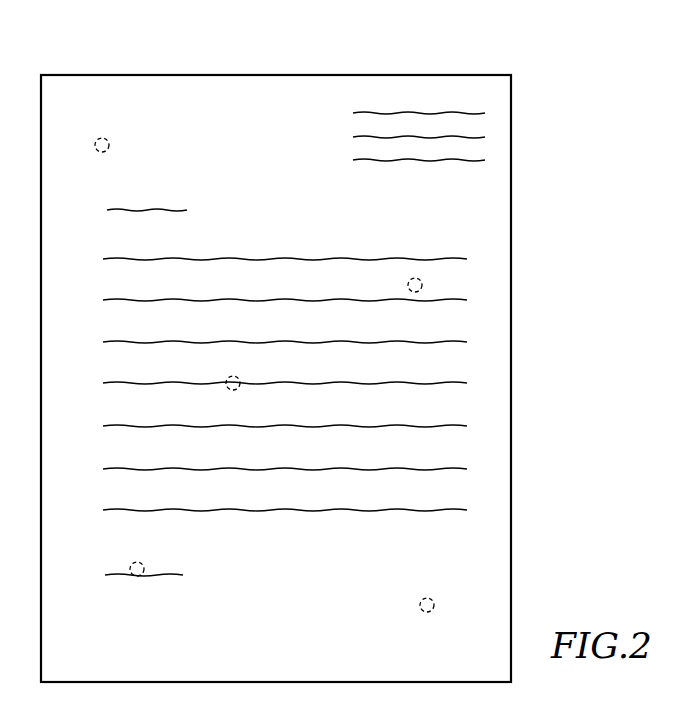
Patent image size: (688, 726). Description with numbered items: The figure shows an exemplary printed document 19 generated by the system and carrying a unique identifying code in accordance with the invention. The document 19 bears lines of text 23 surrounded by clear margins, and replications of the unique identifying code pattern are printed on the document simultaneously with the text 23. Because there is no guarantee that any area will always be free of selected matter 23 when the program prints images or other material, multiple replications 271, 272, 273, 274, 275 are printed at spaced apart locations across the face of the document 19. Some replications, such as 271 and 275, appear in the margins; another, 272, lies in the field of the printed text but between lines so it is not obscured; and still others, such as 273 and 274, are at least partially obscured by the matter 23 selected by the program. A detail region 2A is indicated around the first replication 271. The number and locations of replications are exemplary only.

The document 19 is at (318, 75).
The lines of text 23 is at (267, 258).
The unique identifying code pattern replication 271 is at (95, 140).
The unique identifying code pattern replication 272 is at (408, 283).
The unique identifying code pattern replication 273 is at (240, 377).
The unique identifying code pattern replication 274 is at (136, 576).
The unique identifying code pattern replication 275 is at (420, 602).
The detail view reference 2A is at (109, 147).